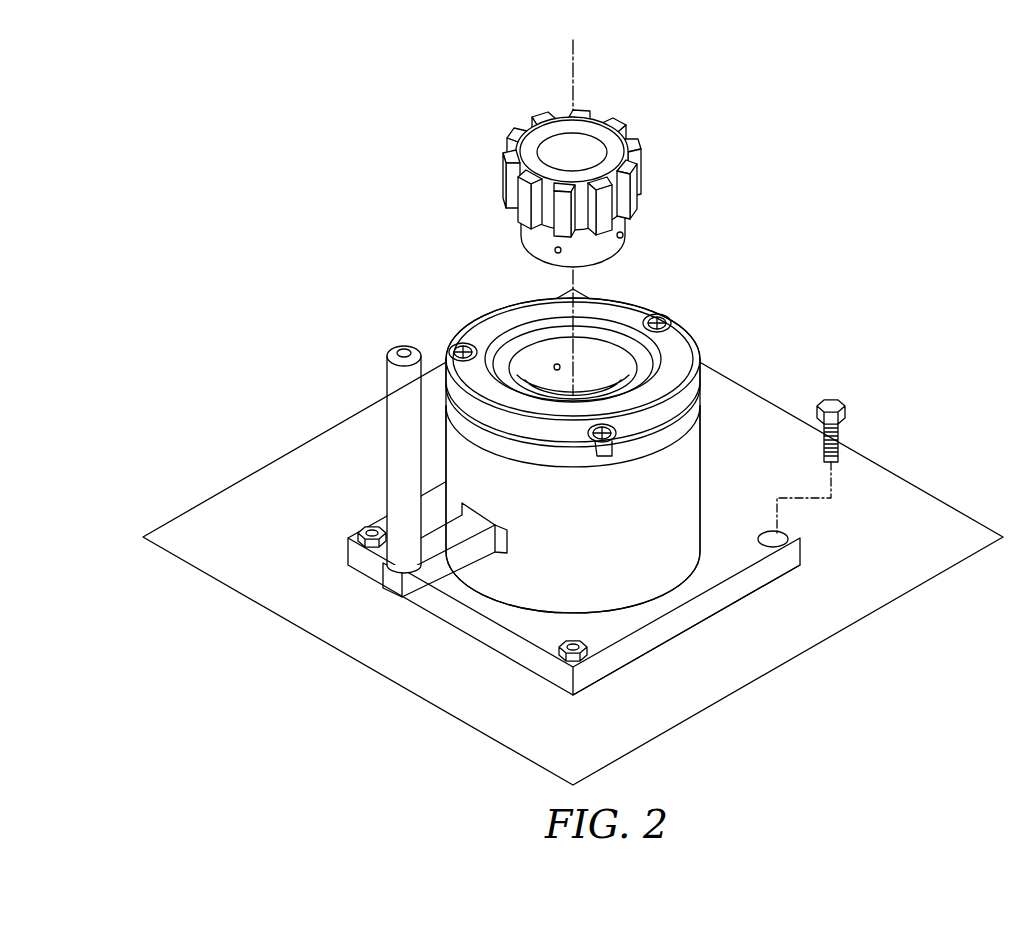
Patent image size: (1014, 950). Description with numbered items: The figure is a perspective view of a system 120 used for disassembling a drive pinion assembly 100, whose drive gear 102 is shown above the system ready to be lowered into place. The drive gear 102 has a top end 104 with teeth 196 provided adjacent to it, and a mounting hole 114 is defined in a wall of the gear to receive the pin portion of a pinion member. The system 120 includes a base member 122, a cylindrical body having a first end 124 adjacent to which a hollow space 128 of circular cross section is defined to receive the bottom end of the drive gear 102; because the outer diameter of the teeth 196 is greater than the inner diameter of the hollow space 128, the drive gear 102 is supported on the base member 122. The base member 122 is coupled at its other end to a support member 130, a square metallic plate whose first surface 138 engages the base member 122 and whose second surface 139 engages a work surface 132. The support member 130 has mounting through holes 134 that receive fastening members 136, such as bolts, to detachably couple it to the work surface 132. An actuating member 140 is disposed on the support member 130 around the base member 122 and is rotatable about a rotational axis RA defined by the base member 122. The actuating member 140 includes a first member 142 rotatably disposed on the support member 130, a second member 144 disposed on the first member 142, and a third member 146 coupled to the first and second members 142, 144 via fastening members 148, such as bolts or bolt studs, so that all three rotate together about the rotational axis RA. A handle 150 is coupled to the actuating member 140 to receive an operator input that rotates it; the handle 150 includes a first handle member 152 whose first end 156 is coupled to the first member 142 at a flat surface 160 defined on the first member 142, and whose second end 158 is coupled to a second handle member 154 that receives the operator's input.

The drive pinion assembly 100 is at (410, 101).
The rotational axis RA is at (576, 54).
The drive gear 102 is at (595, 167).
The top end 104 is at (598, 122).
The teeth 196 is at (643, 153).
The mounting hole 114 is at (556, 251).
The system 120 is at (600, 420).
The base member 122 is at (617, 347).
The first end 124 is at (587, 329).
The hollow space 128 is at (532, 386).
The actuating member 140 is at (550, 314).
The fastening members 148 is at (657, 314).
The third member 146 is at (697, 341).
The second member 144 is at (702, 418).
The first member 142 is at (703, 468).
The first surface 138 is at (716, 501).
The support member 130 is at (605, 571).
The work surface 132 is at (926, 536).
The mounting through holes 134 is at (788, 537).
The fastening members 136 is at (368, 530).
The second surface 139 is at (758, 591).
The handle 150 is at (434, 522).
The first handle member 152 is at (459, 616).
The second handle member 154 is at (386, 456).
The first end 156 is at (492, 570).
The second end 158 is at (392, 604).
The flat surface 160 is at (507, 556).